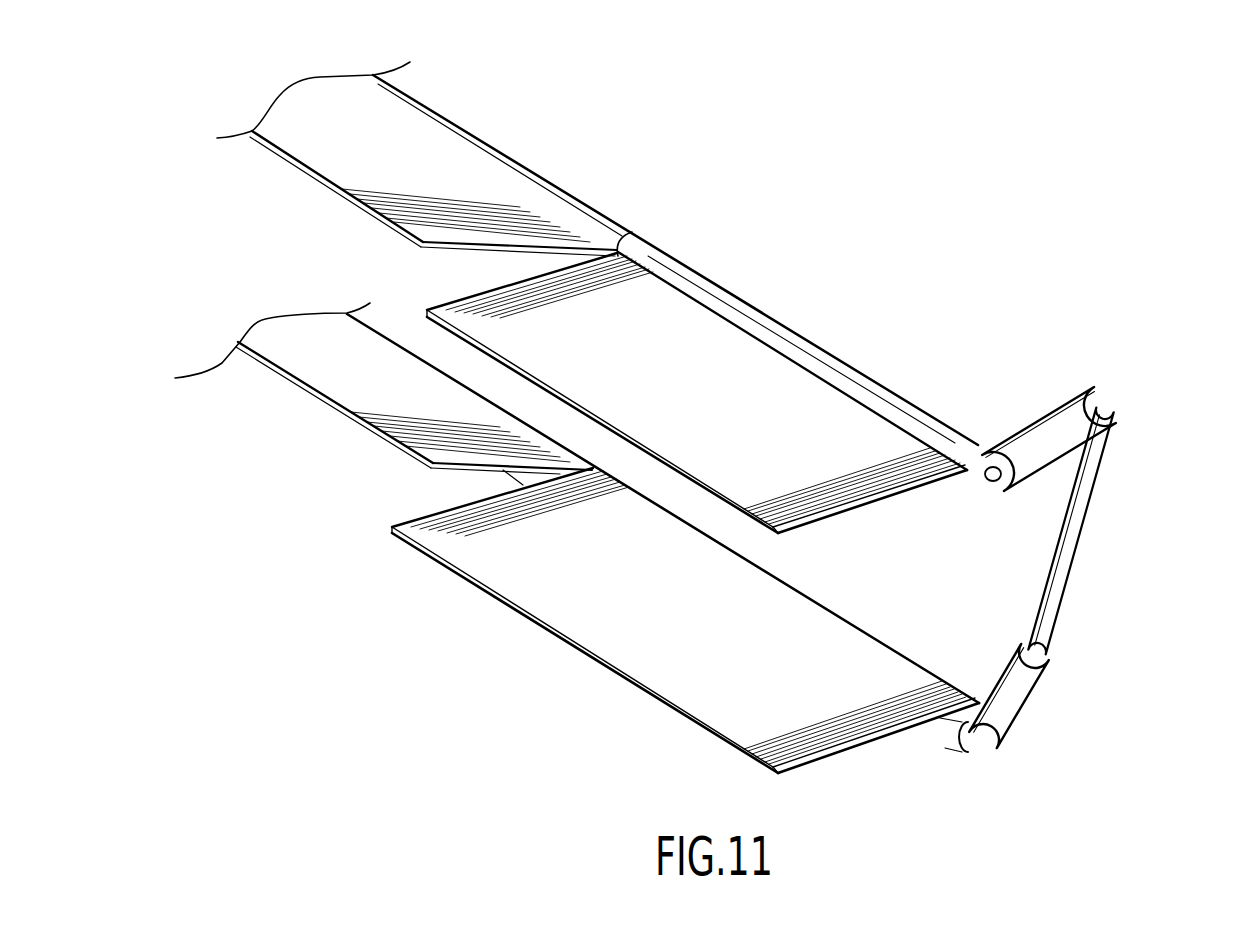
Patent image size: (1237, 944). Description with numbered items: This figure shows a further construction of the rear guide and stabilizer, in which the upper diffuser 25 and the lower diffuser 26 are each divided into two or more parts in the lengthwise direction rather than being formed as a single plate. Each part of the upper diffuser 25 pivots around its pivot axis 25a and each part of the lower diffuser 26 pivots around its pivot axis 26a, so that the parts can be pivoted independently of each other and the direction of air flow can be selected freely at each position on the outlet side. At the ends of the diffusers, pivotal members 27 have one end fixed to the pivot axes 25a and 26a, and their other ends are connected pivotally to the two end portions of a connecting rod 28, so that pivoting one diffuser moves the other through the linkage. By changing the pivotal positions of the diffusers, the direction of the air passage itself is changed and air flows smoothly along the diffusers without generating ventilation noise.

The upper diffuser 25 is at (437, 162).
The pivot axis of the upper diffuser 25a is at (993, 473).
The lower diffuser 26 is at (343, 385).
The pivot axis of the lower diffuser 26a is at (965, 750).
The pivotal member 27 is at (1060, 410).
The connecting rod 28 is at (1070, 542).